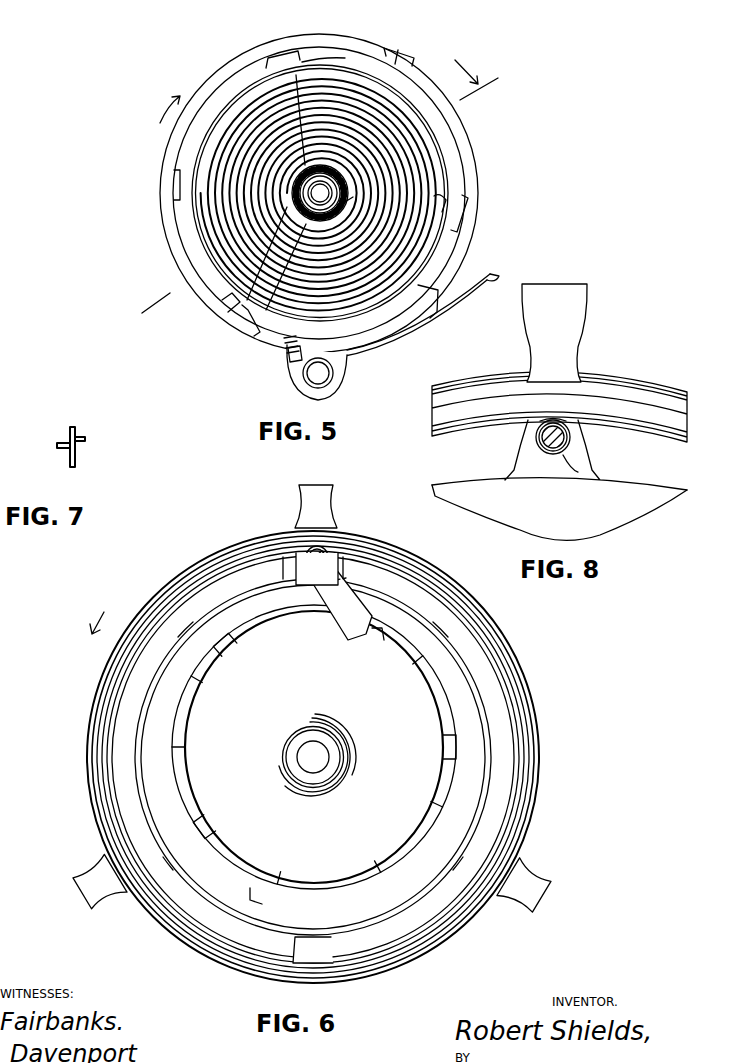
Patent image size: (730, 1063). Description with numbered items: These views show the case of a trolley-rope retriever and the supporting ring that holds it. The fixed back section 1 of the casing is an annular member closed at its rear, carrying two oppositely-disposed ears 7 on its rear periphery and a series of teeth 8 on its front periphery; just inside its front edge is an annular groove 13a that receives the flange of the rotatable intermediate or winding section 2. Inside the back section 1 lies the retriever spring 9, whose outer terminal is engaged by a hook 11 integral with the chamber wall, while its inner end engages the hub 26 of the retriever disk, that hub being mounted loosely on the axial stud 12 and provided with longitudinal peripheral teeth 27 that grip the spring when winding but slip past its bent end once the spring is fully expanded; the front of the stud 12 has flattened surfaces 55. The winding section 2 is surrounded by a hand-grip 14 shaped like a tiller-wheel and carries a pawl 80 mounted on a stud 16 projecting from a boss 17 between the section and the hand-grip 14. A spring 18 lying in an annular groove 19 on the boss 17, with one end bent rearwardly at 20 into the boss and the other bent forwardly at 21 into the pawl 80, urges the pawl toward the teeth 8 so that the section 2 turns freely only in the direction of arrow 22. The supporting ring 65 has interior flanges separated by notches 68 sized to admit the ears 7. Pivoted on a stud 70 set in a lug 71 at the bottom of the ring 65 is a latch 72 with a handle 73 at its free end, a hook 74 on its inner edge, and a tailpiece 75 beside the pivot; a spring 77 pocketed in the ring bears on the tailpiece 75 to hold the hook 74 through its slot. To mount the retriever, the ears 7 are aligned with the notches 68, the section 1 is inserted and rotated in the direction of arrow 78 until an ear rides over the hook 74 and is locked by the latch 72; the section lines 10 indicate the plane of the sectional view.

In FIG. 5, the back section 1 is at (303, 62).
In FIG. 6, the back section 1 is at (314, 747).
In FIG. 8, the intermediate section 2 is at (644, 504).
In FIG. 6, the intermediate section 2 is at (455, 778).
In FIG. 6, the ears 7 is at (319, 763).
In FIG. 5, the teeth 8 is at (180, 178).
In FIG. 6, the teeth 8 is at (232, 662).
In FIG. 5, the retriever spring 9 is at (214, 187).
In FIG. 5, the section lines 10- 10 is at (315, 193).
In FIG. 5, the hook 11 is at (446, 203).
In FIG. 5, the axial stud 12 is at (338, 190).
In FIG. 6, the axial stud 12 is at (324, 760).
In FIG. 5, the annular groove 13a is at (252, 85).
In FIG. 8, the hand-grip 14 is at (650, 382).
In FIG. 6, the hand-grip 14 is at (540, 730).
In FIG. 8, the stud 16 is at (537, 440).
In FIG. 6, the stud 16 is at (330, 562).
In FIG. 8, the boss 17 is at (600, 470).
In FIG. 6, the boss 17 is at (304, 560).
In FIG. 8, the spring 18 is at (553, 450).
In FIG. 7, the spring 18 is at (76, 447).
In FIG. 8, the annular groove 19 is at (568, 436).
In FIG. 8, the rearwardly bent end 20 is at (572, 424).
In FIG. 7, the rearwardly bent end 20 is at (84, 438).
In FIG. 8, the forwardly bent end 21 is at (578, 452).
In FIG. 7, the forwardly bent end 21 is at (58, 447).
In FIG. 6, the arrow 22 is at (91, 611).
In FIG. 5, the hub 26 is at (346, 171).
In FIG. 5, the teeth 27 is at (296, 75).
In FIG. 5, the flattened surfaces 55 is at (226, 303).
In FIG. 5, the supporting ring 65 is at (170, 226).
In FIG. 5, the notches 68 is at (395, 68).
In FIG. 5, the stud 70 is at (318, 373).
In FIG. 5, the lug 71 is at (340, 387).
In FIG. 5, the latch 72 is at (397, 353).
In FIG. 5, the handle 73 is at (496, 277).
In FIG. 5, the hook 74 is at (433, 327).
In FIG. 5, the tailpiece 75 is at (293, 365).
In FIG. 5, the spring 77 is at (286, 354).
In FIG. 5, the arrow 78 is at (155, 120).
In FIG. 6, the pawl 80 is at (356, 620).